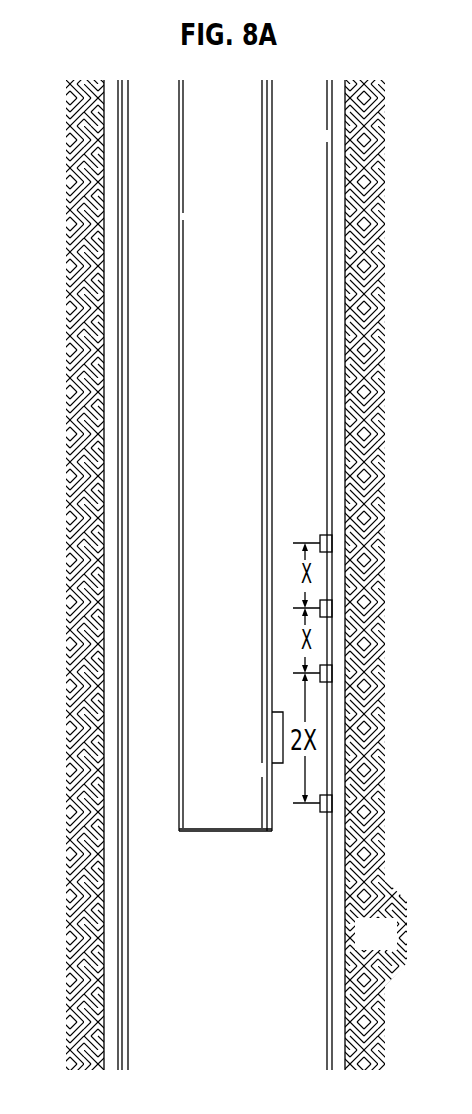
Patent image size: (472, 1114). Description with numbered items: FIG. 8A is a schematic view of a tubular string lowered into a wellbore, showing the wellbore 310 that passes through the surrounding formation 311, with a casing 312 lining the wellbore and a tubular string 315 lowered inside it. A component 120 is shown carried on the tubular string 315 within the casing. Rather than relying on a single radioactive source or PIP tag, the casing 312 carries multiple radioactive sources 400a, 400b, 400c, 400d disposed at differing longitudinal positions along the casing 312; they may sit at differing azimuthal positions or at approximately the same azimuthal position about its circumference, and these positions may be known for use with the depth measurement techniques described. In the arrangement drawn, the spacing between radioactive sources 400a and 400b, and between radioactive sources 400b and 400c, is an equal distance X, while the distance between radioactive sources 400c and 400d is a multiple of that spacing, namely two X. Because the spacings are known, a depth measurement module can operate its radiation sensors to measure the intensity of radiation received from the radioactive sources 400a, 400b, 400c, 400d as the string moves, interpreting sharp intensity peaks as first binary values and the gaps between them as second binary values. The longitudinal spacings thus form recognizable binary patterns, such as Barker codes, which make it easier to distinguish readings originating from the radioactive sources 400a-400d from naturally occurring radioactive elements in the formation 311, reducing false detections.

The wellbore 310 is at (142, 198).
The formation 311 is at (393, 947).
The casing 312 is at (346, 388).
The tubing string 315 is at (242, 286).
The sensor component on tubing 120 is at (270, 737).
The radioactive source 400a is at (332, 543).
The radioactive source 400b is at (332, 608).
The radioactive source 400c is at (332, 673).
The radioactive source 400d is at (332, 805).